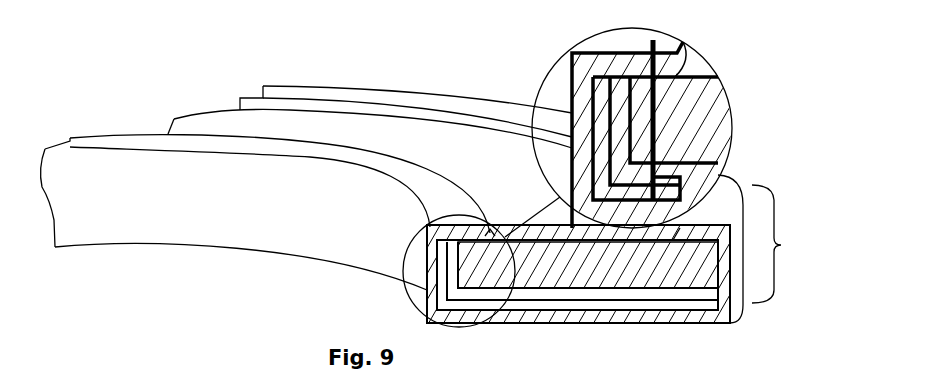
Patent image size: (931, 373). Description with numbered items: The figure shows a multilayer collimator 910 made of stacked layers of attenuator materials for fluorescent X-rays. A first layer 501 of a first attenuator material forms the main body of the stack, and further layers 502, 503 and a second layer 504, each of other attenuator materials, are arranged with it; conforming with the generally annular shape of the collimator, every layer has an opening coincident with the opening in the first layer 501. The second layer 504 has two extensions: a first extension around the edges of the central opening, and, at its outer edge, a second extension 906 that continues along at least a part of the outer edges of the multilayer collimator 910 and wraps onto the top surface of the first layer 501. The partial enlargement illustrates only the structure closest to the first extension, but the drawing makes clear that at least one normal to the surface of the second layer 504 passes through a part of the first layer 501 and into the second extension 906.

The first layer 501 is at (597, 272).
The layer 502 is at (447, 262).
The layer 503 is at (450, 286).
The second layer 504 is at (427, 317).
The second extension 906 is at (720, 297).
The multilayer collimator 910 is at (772, 249).